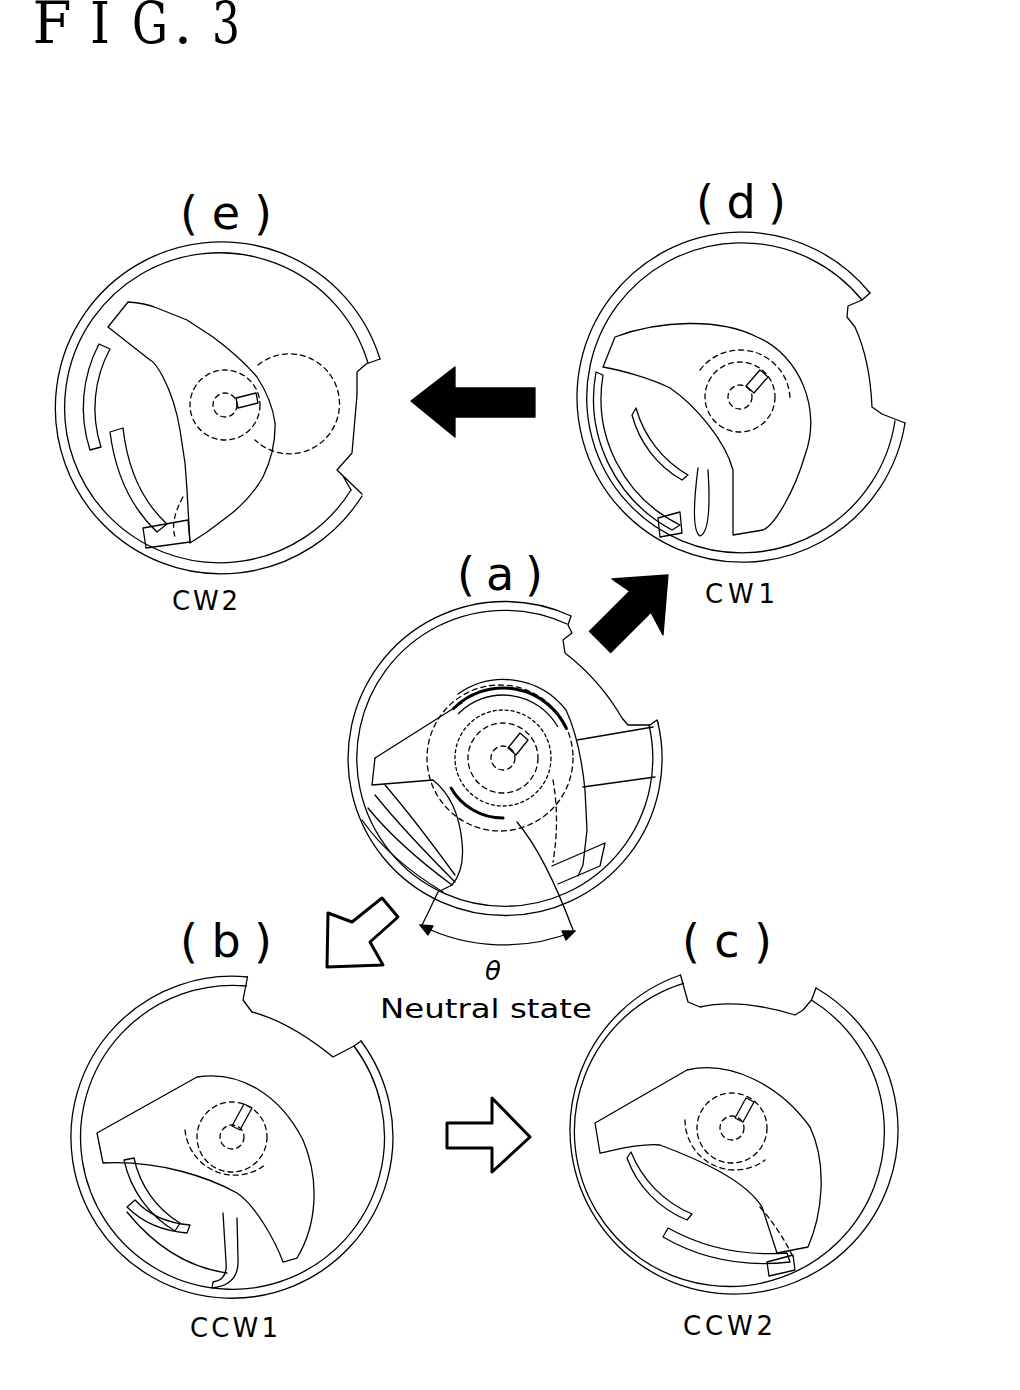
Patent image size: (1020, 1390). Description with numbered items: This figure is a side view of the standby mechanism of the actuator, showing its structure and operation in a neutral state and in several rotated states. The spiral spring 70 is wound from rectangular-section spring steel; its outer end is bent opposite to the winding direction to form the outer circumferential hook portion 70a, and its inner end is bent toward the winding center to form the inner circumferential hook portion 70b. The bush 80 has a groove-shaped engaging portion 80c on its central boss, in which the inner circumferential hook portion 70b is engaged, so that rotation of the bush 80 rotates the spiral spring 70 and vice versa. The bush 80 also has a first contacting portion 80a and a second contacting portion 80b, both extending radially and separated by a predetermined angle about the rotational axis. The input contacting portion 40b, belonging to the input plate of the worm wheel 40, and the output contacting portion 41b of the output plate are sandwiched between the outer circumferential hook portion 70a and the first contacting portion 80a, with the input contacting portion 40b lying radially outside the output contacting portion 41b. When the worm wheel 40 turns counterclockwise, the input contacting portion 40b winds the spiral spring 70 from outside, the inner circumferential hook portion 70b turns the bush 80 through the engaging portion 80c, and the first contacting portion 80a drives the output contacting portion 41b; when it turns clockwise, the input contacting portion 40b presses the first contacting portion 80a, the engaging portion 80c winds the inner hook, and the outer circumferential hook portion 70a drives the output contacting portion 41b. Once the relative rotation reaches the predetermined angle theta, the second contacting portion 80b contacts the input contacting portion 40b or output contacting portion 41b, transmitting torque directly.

The worm wheel 40 is at (598, 718).
The input contacting portion 40b is at (387, 807).
The output contacting portion 41b is at (428, 832).
The spiral spring 70 is at (655, 730).
The outer circumferential hook portion 70a is at (425, 868).
The inner circumferential hook portion 70b is at (655, 777).
The bush 80 is at (570, 810).
The first contacting portion 80a is at (378, 745).
The second contacting portion 80b is at (605, 848).
The engaging portion 80c is at (470, 735).